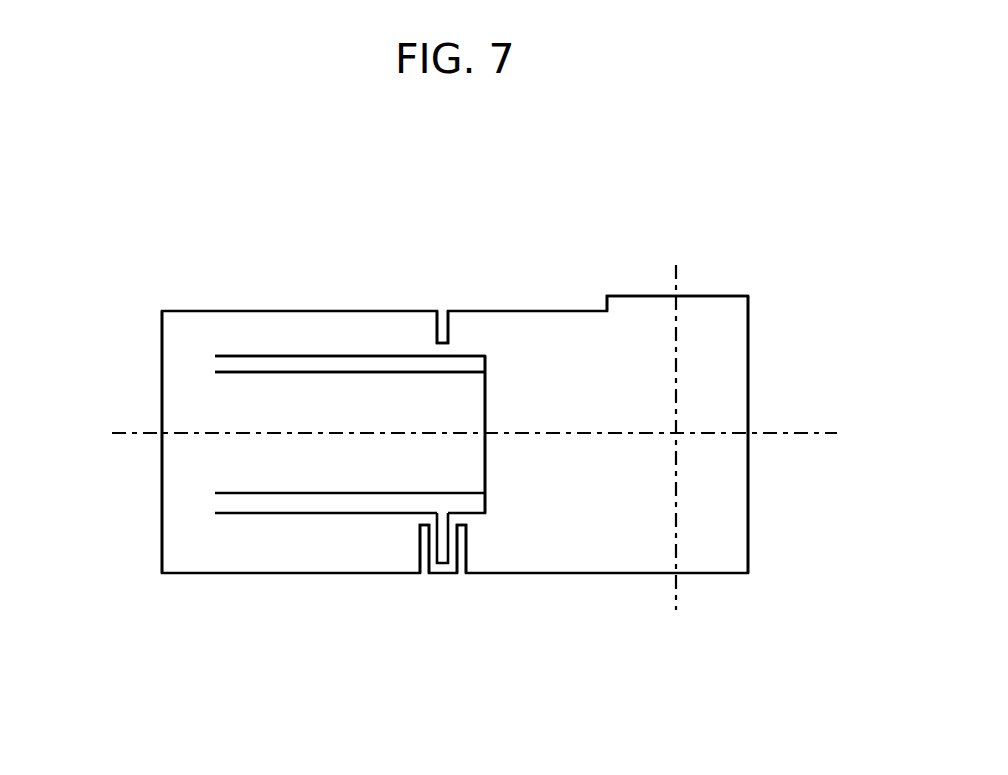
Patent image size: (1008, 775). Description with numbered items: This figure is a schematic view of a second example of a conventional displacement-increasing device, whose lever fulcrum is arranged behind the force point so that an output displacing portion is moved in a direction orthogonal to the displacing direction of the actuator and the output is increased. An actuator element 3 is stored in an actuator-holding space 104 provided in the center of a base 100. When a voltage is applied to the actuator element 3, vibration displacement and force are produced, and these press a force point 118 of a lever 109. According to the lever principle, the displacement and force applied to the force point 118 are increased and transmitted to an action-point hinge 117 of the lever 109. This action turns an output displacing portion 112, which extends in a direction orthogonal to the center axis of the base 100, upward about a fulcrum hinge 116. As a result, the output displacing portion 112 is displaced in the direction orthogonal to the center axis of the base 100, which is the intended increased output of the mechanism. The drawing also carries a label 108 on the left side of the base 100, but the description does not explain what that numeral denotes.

The base 100 is at (595, 573).
The left side edge 108 is at (175, 327).
The lever 109 is at (710, 507).
The output displacing portion 112 is at (644, 295).
The fulcrum hinge 116 is at (448, 350).
The action-point hinge 117 is at (442, 574).
The actuator element 3 is at (315, 480).
The actuator-holding space 104 is at (287, 367).
The force point 118 is at (485, 447).